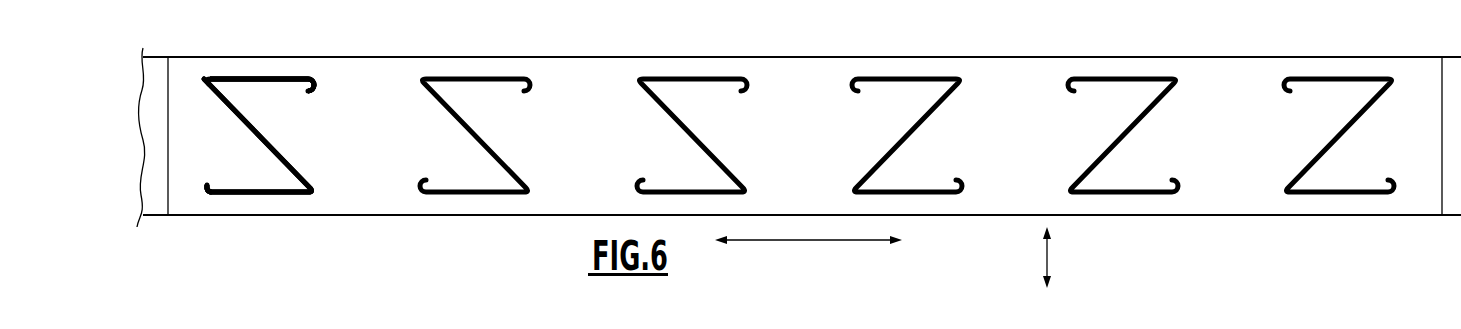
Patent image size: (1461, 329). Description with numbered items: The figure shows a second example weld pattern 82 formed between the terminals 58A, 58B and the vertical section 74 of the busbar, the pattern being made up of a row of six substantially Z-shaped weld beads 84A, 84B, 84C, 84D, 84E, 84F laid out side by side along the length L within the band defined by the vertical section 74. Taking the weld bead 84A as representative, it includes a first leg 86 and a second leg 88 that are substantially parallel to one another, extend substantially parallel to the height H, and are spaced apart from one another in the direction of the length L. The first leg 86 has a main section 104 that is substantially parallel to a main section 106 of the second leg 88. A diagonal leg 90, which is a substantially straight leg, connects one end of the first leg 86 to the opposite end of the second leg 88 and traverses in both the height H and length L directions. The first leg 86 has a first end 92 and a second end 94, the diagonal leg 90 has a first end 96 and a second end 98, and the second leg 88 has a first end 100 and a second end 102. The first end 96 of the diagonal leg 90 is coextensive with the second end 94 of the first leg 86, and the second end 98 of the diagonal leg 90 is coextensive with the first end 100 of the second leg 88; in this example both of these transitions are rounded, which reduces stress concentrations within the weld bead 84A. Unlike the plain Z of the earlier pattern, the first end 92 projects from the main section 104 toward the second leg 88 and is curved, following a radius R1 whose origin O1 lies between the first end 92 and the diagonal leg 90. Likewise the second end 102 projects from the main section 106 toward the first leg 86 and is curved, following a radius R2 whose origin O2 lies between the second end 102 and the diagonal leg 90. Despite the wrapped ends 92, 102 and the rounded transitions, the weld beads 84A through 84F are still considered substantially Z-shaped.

The terminal 58A is at (364, 82).
The terminal 58B is at (364, 82).
The vertical section 74 is at (158, 208).
The weld pattern 82 is at (227, 66).
The weld bead 84A is at (280, 72).
The weld bead 84B is at (501, 72).
The weld bead 84C is at (717, 72).
The weld bead 84D is at (929, 72).
The weld bead 84E is at (1146, 72).
The weld bead 84F is at (1359, 72).
The first leg 86 is at (243, 91).
The second leg 88 is at (294, 205).
The diagonal leg 90 is at (283, 141).
The first end 92 is at (321, 76).
The second end 94 is at (193, 88).
The first end 96 is at (193, 88).
The second end 98 is at (325, 200).
The first end 100 is at (325, 200).
The second end 102 is at (215, 176).
The main section 104 is at (252, 77).
The main section 106 is at (261, 197).
The origin O1 is at (294, 92).
The origin O2 is at (221, 185).
The radius R1 is at (311, 93).
The radius R2 is at (208, 194).
The height H is at (795, 240).
The length L is at (1047, 255).